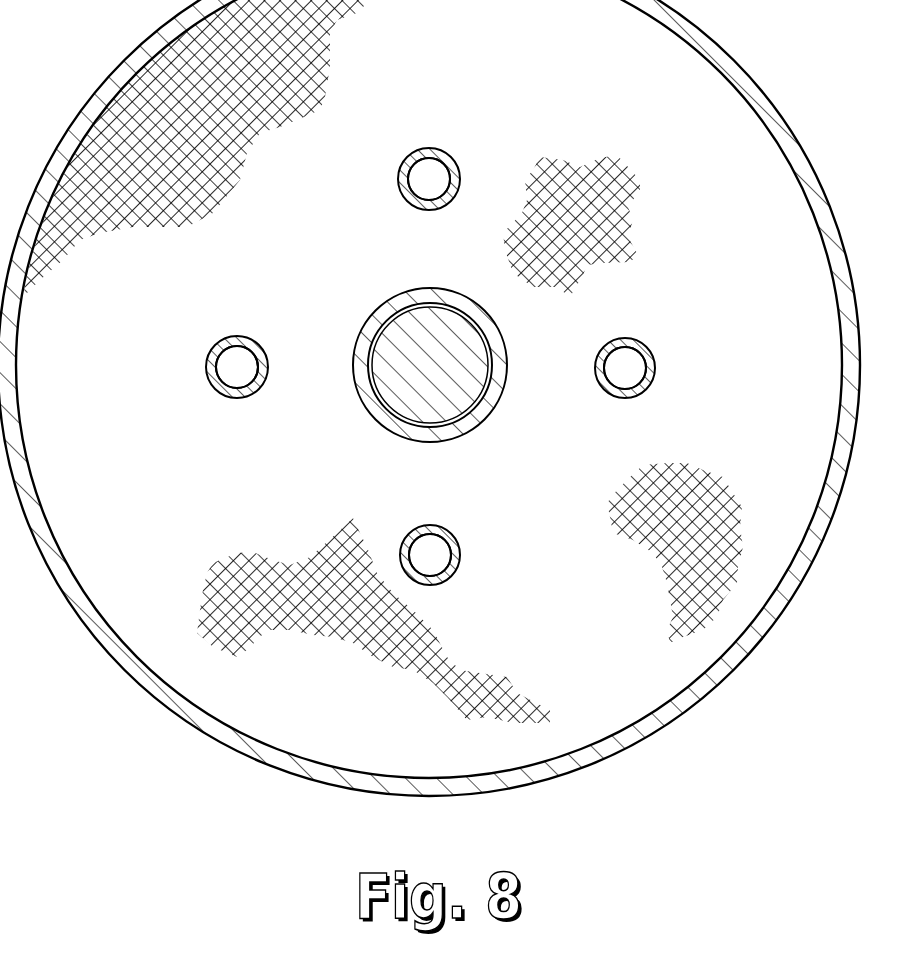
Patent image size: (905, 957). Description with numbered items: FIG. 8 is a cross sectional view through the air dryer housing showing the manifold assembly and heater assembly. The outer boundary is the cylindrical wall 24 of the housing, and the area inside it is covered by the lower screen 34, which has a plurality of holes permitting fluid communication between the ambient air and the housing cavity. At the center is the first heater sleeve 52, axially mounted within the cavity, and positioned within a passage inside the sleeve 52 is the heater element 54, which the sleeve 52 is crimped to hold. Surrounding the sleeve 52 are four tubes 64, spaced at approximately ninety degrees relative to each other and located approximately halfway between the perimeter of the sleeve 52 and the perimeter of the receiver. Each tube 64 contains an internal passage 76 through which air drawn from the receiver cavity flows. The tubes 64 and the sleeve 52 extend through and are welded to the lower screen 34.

The cylindrical wall 24 is at (735, 62).
The lower screen 34 is at (240, 133).
The first heater sleeve 52 is at (473, 420).
The heater element 54 is at (410, 327).
The tubes 64 is at (423, 208).
The passage 76 is at (427, 179).